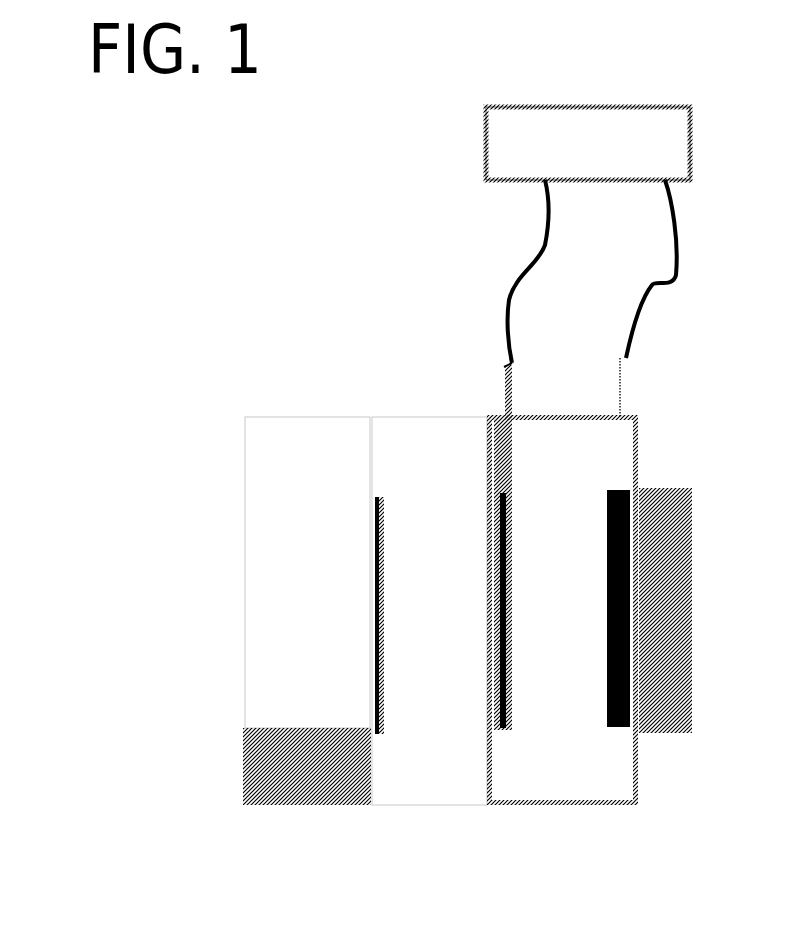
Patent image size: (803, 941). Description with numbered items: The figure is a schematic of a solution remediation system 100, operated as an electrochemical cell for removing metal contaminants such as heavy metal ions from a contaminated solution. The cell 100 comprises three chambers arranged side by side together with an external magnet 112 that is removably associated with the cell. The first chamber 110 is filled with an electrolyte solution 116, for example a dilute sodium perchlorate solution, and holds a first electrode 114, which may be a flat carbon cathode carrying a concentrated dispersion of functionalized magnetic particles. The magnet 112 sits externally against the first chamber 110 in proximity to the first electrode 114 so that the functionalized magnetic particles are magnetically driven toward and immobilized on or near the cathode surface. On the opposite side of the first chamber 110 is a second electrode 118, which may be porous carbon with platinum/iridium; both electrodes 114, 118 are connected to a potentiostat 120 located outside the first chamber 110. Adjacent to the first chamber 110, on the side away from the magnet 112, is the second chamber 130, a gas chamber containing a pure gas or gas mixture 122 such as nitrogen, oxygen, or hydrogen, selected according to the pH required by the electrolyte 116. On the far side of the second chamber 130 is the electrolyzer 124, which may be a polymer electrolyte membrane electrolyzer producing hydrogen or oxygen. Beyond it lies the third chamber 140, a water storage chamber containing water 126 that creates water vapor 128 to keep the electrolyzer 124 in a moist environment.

The solution remediation system 100 is at (285, 312).
The first chamber 110 is at (565, 544).
The external magnet 112 is at (671, 735).
The first electrode 114 is at (620, 735).
The electrolyte solution 116 is at (563, 750).
The second electrode 118 is at (503, 735).
The potentiostat 120 is at (595, 157).
The gas mixture 122 is at (430, 755).
The electrolyzer 124 is at (378, 736).
The water 126 is at (305, 752).
The water vapor 128 is at (292, 613).
The second chamber 130 is at (450, 507).
The third chamber 140 is at (325, 507).